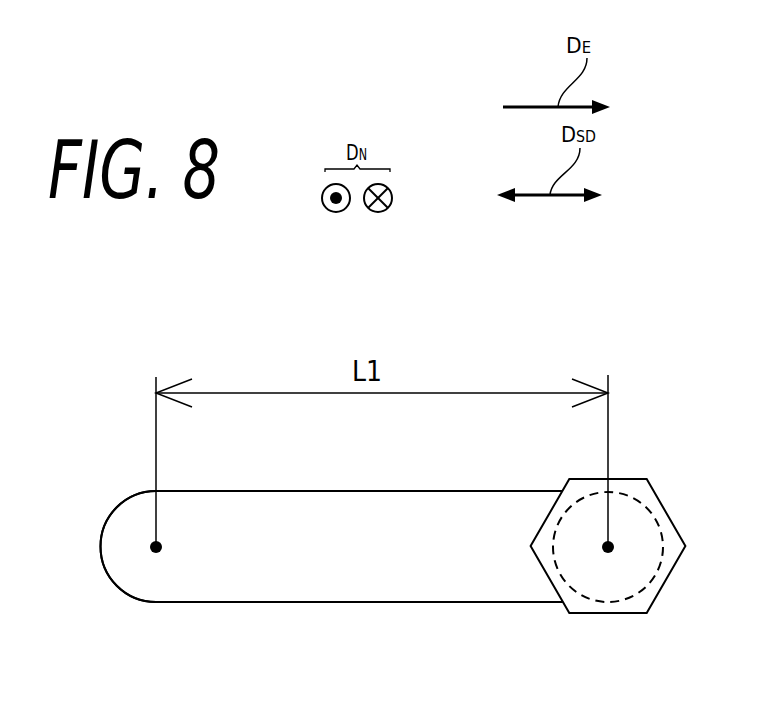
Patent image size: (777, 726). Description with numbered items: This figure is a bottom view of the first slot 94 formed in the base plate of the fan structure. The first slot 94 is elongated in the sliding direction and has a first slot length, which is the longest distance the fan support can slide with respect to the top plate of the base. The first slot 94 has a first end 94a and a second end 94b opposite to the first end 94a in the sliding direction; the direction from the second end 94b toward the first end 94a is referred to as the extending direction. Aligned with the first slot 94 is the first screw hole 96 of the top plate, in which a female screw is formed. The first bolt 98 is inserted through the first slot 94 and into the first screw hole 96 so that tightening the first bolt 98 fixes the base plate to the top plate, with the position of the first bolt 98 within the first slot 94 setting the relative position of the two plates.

The first slot 94 is at (450, 590).
The first end 94a is at (660, 495).
The second end 94b is at (130, 509).
The first screw hole 96 is at (663, 583).
The first bolt 98 is at (612, 613).